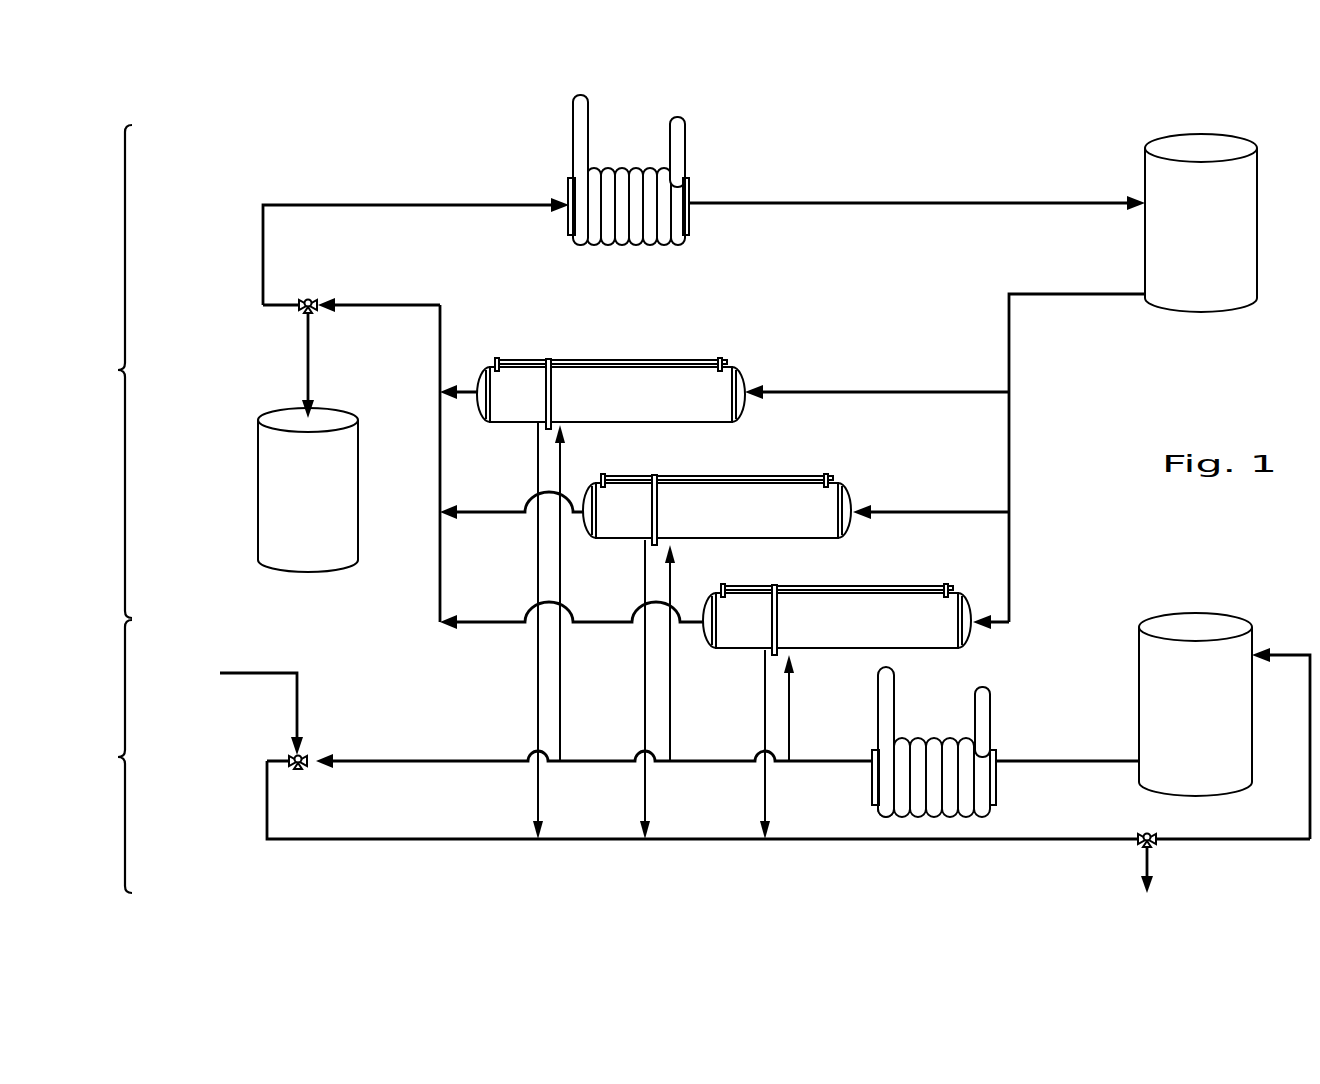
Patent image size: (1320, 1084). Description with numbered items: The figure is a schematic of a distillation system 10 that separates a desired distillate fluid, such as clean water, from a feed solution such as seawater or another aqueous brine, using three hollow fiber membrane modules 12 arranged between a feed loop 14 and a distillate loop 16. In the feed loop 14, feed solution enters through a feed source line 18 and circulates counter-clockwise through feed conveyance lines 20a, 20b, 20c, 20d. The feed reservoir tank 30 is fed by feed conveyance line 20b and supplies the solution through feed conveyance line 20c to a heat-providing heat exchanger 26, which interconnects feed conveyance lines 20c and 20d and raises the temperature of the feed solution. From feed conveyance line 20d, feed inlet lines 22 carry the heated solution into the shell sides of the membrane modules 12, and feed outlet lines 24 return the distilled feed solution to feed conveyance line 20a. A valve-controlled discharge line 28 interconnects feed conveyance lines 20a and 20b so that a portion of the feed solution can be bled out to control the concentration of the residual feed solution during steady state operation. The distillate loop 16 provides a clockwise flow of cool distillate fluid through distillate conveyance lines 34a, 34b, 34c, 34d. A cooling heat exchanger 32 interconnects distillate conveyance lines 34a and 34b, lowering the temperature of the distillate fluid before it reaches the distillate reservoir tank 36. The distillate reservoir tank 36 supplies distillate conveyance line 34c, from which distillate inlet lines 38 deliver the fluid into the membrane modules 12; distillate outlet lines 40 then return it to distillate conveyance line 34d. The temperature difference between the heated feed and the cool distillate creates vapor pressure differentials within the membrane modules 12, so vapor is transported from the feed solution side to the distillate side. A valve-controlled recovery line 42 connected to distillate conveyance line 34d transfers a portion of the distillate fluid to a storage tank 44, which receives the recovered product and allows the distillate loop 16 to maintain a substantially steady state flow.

The distillation system 10 is at (313, 126).
The membrane modules 12 is at (670, 378).
The feed loop 14 is at (109, 756).
The distillate loop 16 is at (109, 371).
The feed source line 18 is at (275, 673).
The feed conveyance line 20a is at (600, 842).
The feed conveyance line 20b is at (1238, 842).
The feed conveyance line 20c is at (1028, 760).
The feed conveyance line 20d is at (366, 761).
The feed inlet lines 22 is at (563, 645).
The feed outlet lines 24 is at (536, 790).
The heat exchanger 26 is at (874, 765).
The discharge line 28 is at (1152, 865).
The feed reservoir tank 30 is at (1208, 628).
The heat exchanger 32 is at (690, 182).
The distillate conveyance line 34a is at (365, 205).
The distillate conveyance line 34b is at (868, 203).
The distillate conveyance line 34c is at (1046, 296).
The distillate conveyance line 34d is at (406, 305).
The distillate reservoir tank 36 is at (1196, 150).
The distillate inlet lines 38 is at (905, 392).
The distillate outlet lines 40 is at (463, 396).
The recovery line 42 is at (305, 345).
The storage tank 44 is at (275, 482).